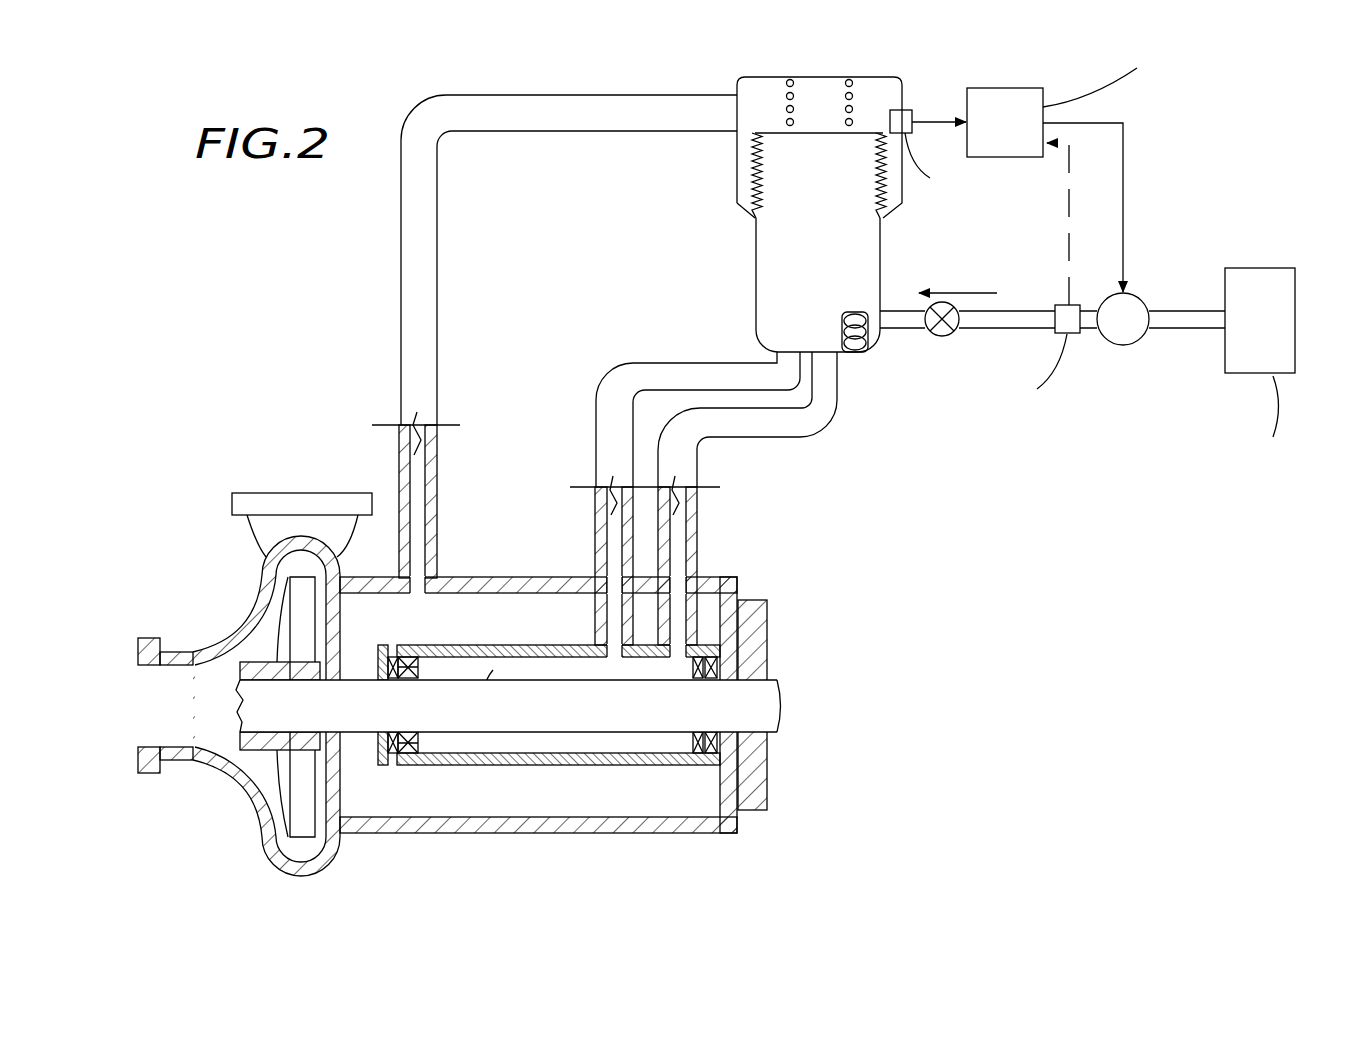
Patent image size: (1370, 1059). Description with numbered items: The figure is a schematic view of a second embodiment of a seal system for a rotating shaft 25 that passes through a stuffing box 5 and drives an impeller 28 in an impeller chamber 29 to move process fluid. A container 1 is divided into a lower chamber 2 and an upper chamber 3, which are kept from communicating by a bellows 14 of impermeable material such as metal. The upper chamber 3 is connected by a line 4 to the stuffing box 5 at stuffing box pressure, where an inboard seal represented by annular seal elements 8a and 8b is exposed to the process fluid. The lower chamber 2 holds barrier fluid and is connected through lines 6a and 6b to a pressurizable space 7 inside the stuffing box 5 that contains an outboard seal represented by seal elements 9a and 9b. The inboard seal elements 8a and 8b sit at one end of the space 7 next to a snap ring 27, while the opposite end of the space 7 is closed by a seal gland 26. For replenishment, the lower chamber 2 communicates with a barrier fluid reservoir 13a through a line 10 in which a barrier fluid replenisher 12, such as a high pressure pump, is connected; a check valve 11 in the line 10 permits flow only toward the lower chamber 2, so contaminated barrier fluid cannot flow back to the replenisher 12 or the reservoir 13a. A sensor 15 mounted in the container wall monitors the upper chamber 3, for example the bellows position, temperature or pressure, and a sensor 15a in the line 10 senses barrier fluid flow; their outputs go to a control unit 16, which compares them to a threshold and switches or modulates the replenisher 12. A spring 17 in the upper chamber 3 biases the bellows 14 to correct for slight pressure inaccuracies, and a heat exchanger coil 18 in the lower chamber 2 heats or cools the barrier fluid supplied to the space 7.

The container 1 is at (760, 220).
The lower chamber 2 is at (777, 291).
The upper chamber 3 is at (825, 82).
The line 4 is at (508, 110).
The stuffing box 5 is at (482, 797).
The line 6a is at (596, 547).
The line 6b is at (698, 540).
The space 7 is at (560, 740).
The annular seal element 8a is at (418, 745).
The annular seal element 8b is at (392, 740).
The seal element 9a is at (692, 745).
The seal element 9b is at (713, 731).
The line 10 is at (1013, 330).
The check valve 11 is at (947, 337).
The barrier fluid replenisher 12 is at (1113, 345).
The barrier fluid reservoir 13a is at (1262, 268).
The bellows 14 is at (755, 180).
The sensor 15 is at (905, 112).
The sensor 15a is at (1060, 303).
The control unit 16 is at (972, 87).
The spring 17 is at (787, 122).
The heat exchanger coil 18 is at (850, 354).
The rotating shaft 25 is at (762, 724).
The seal gland 26 is at (770, 637).
The snap ring 27 is at (377, 752).
The impeller 28 is at (280, 707).
The impeller chamber 29 is at (290, 638).